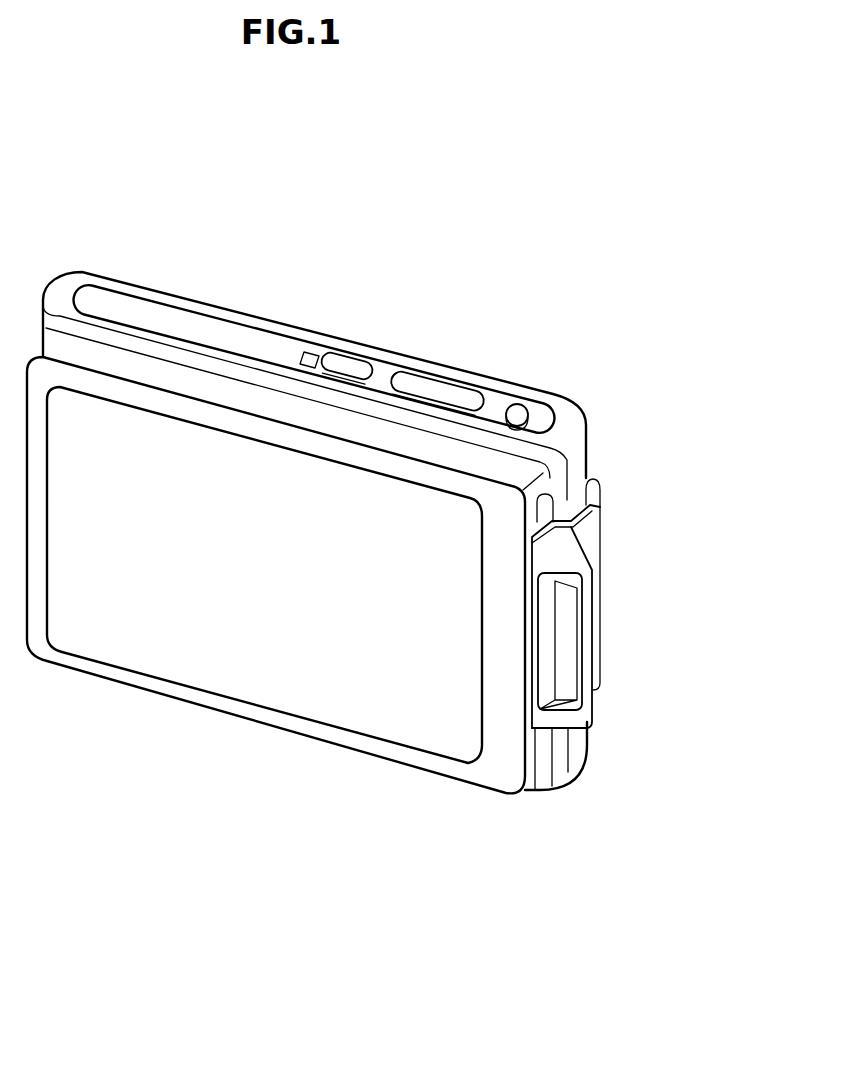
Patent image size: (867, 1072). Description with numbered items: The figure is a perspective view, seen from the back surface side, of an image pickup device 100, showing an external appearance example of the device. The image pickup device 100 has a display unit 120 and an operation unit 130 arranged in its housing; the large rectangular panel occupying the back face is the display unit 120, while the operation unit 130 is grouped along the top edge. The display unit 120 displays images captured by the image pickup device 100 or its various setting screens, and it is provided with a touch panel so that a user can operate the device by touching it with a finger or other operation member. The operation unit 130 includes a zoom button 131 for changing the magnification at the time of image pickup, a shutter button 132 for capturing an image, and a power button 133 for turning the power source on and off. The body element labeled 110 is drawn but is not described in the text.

The image pickup device 100 is at (618, 284).
The housing body 110 is at (478, 797).
The display unit 120 is at (260, 645).
The operation unit 130 is at (537, 283).
The zoom button 131 is at (342, 362).
The shutter button 132 is at (431, 388).
The power button 133 is at (517, 404).